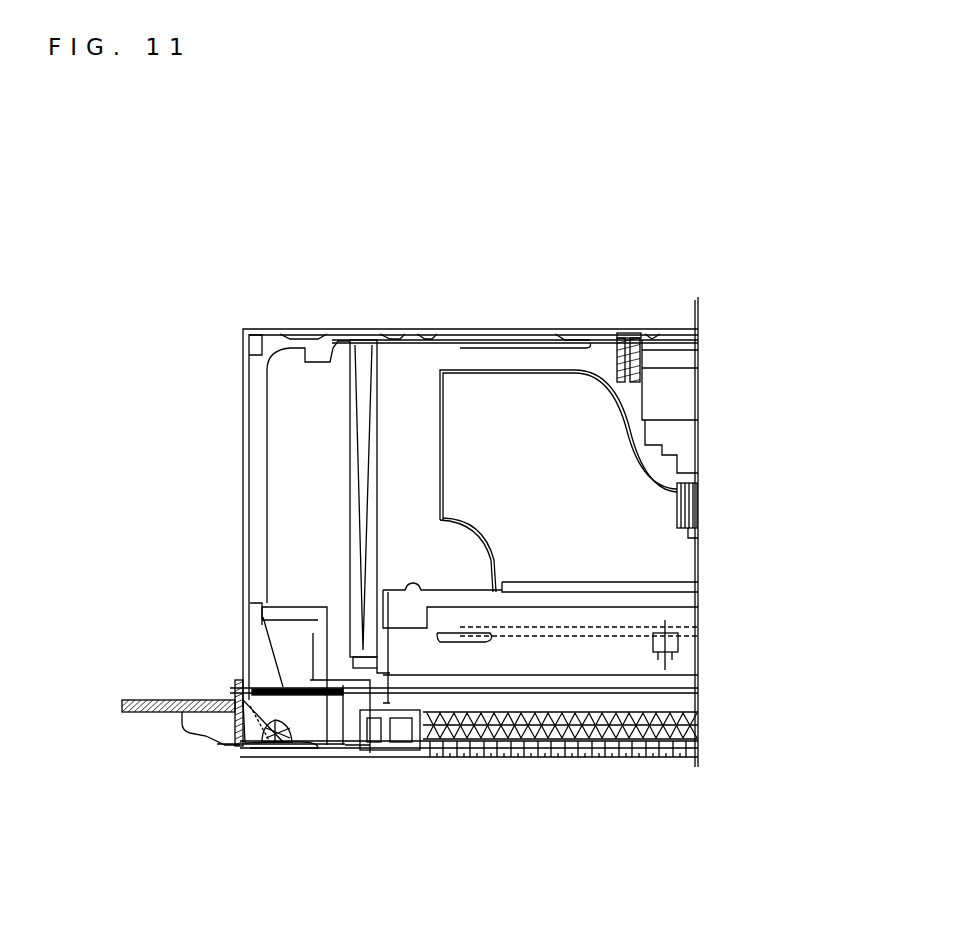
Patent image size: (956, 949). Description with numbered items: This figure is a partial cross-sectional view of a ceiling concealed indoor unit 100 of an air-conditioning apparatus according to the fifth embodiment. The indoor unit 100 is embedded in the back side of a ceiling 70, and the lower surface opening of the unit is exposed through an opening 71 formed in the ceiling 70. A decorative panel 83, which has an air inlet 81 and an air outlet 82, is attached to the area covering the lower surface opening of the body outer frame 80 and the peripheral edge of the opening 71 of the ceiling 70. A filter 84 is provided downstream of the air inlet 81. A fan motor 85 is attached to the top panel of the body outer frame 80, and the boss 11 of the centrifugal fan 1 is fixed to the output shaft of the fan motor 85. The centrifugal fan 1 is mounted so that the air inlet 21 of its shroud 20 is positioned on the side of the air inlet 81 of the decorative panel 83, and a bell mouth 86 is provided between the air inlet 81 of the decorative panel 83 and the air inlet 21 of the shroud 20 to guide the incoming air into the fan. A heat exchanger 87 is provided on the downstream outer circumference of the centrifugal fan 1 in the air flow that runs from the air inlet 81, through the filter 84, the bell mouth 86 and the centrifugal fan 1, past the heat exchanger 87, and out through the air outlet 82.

The ceiling concealed indoor unit 100 is at (727, 231).
The body outer frame 80 is at (240, 395).
The heat exchanger 87 is at (363, 352).
The fan motor 85 is at (677, 382).
The shroud 20 is at (488, 535).
The air inlet of the shroud 21 is at (613, 597).
The boss 11 is at (688, 503).
The centrifugal fan 1 is at (642, 557).
The bell mouth 86 is at (483, 635).
The filter 84 is at (467, 757).
The air inlet 81 is at (577, 757).
The decorative panel 83 is at (627, 757).
The ceiling 70 is at (143, 716).
The opening 71 is at (233, 742).
The air outlet 82 is at (288, 747).